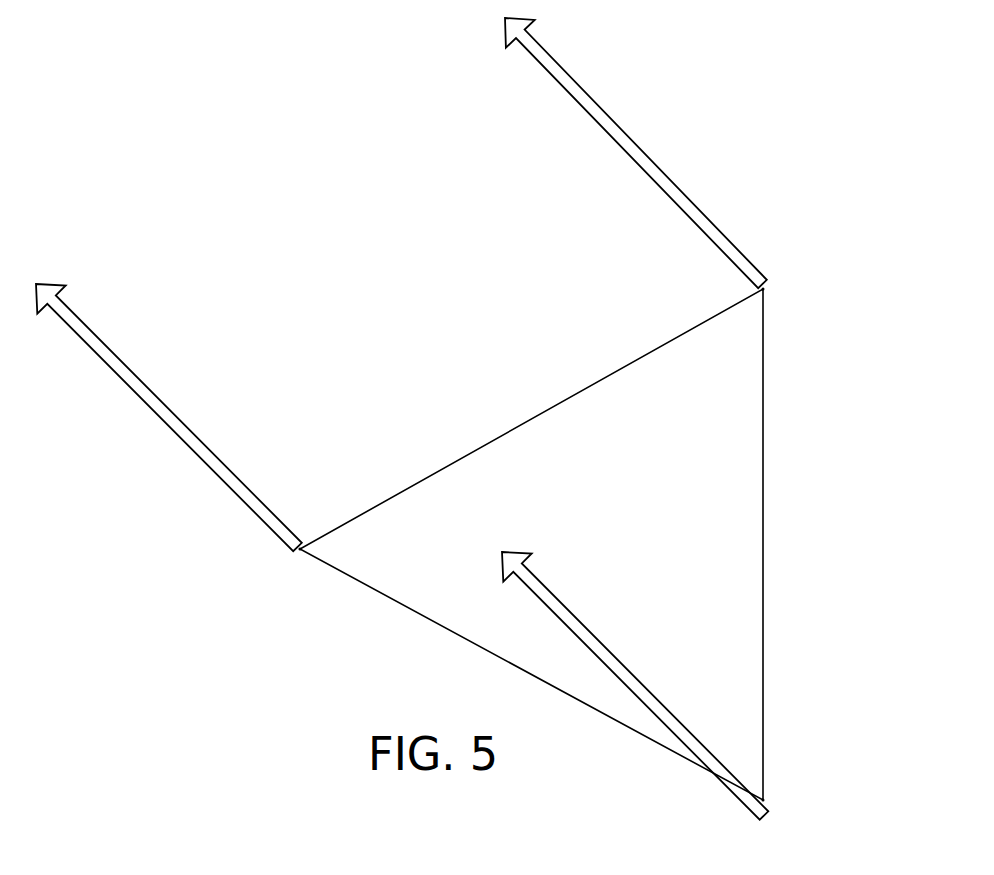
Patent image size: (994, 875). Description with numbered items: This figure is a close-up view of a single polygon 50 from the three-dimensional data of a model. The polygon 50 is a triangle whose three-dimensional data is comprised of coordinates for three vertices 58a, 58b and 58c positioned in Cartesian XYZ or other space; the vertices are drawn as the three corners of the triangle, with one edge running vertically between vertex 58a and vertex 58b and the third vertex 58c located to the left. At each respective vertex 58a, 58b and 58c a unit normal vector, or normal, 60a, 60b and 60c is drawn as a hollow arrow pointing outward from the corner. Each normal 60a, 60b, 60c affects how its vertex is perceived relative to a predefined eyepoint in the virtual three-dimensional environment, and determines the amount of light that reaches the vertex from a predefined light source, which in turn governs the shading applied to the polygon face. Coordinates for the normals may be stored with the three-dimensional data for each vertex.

The polygon 50 is at (745, 521).
The vertex 58a is at (767, 288).
The vertex 58b is at (767, 800).
The vertex 58c is at (300, 552).
The unit normal vector 60a is at (553, 62).
The unit normal vector 60b is at (558, 602).
The unit normal vector 60c is at (140, 383).